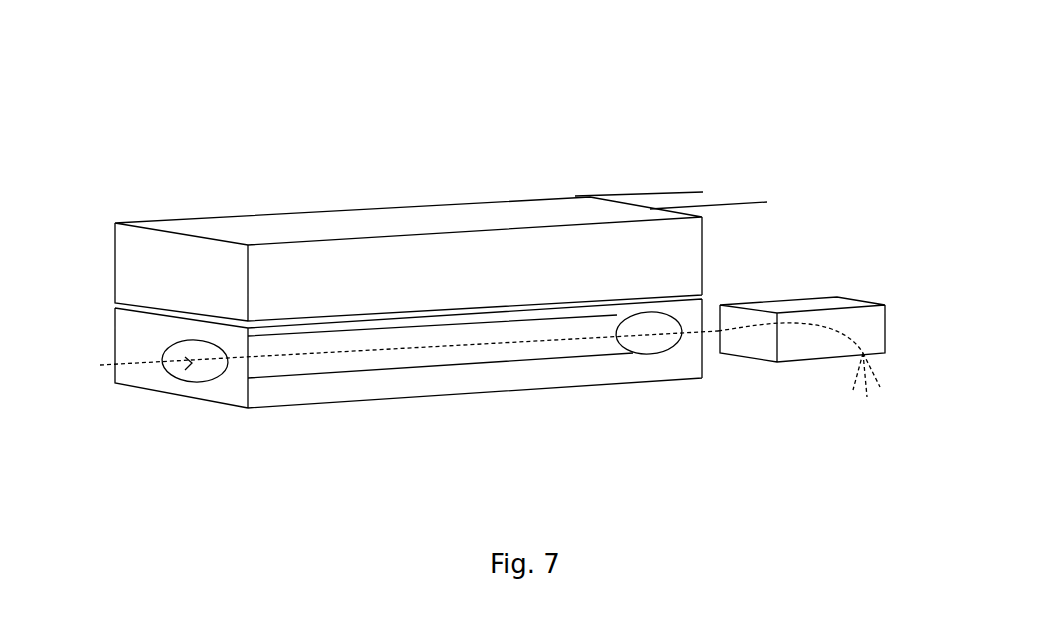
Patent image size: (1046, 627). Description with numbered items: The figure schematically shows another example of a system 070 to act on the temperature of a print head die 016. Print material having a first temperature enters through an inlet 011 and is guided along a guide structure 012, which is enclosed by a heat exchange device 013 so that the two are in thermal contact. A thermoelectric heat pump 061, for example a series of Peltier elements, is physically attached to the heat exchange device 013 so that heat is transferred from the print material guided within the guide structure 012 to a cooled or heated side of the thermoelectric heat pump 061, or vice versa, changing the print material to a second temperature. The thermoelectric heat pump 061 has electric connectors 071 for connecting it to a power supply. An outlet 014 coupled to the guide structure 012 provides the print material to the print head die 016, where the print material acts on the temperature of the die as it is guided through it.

The system 070 is at (506, 274).
The thermoelectric heat pump 061 is at (230, 206).
The electric connectors 071 is at (715, 184).
The print head die 016 is at (845, 282).
The inlet 011 is at (190, 392).
The guide structure 012 is at (327, 385).
The heat exchange device 013 is at (408, 407).
The outlet 014 is at (647, 368).